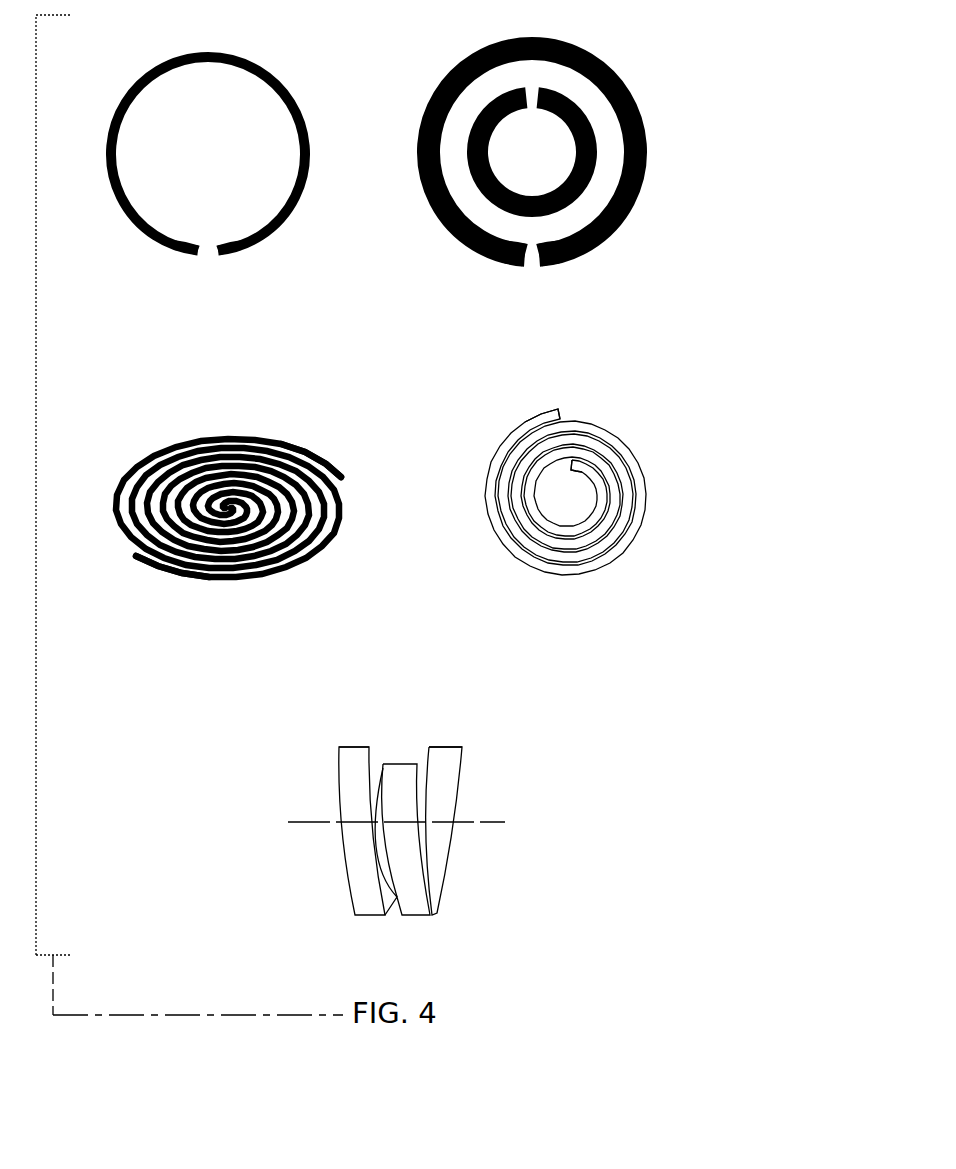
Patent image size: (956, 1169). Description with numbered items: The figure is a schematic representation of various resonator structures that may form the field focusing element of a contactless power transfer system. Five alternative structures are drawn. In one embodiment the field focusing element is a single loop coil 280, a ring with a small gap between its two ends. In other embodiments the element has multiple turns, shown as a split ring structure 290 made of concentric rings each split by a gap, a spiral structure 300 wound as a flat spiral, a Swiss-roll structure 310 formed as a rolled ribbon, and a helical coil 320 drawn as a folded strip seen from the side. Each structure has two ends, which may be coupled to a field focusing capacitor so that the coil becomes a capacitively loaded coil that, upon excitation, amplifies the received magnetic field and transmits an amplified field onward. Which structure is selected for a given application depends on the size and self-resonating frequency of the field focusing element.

The single loop coil 280 is at (258, 60).
The split ring structure 290 is at (606, 58).
The spiral structure 300 is at (333, 388).
The Swiss-roll structure 310 is at (648, 371).
The helical coil 320 is at (504, 676).